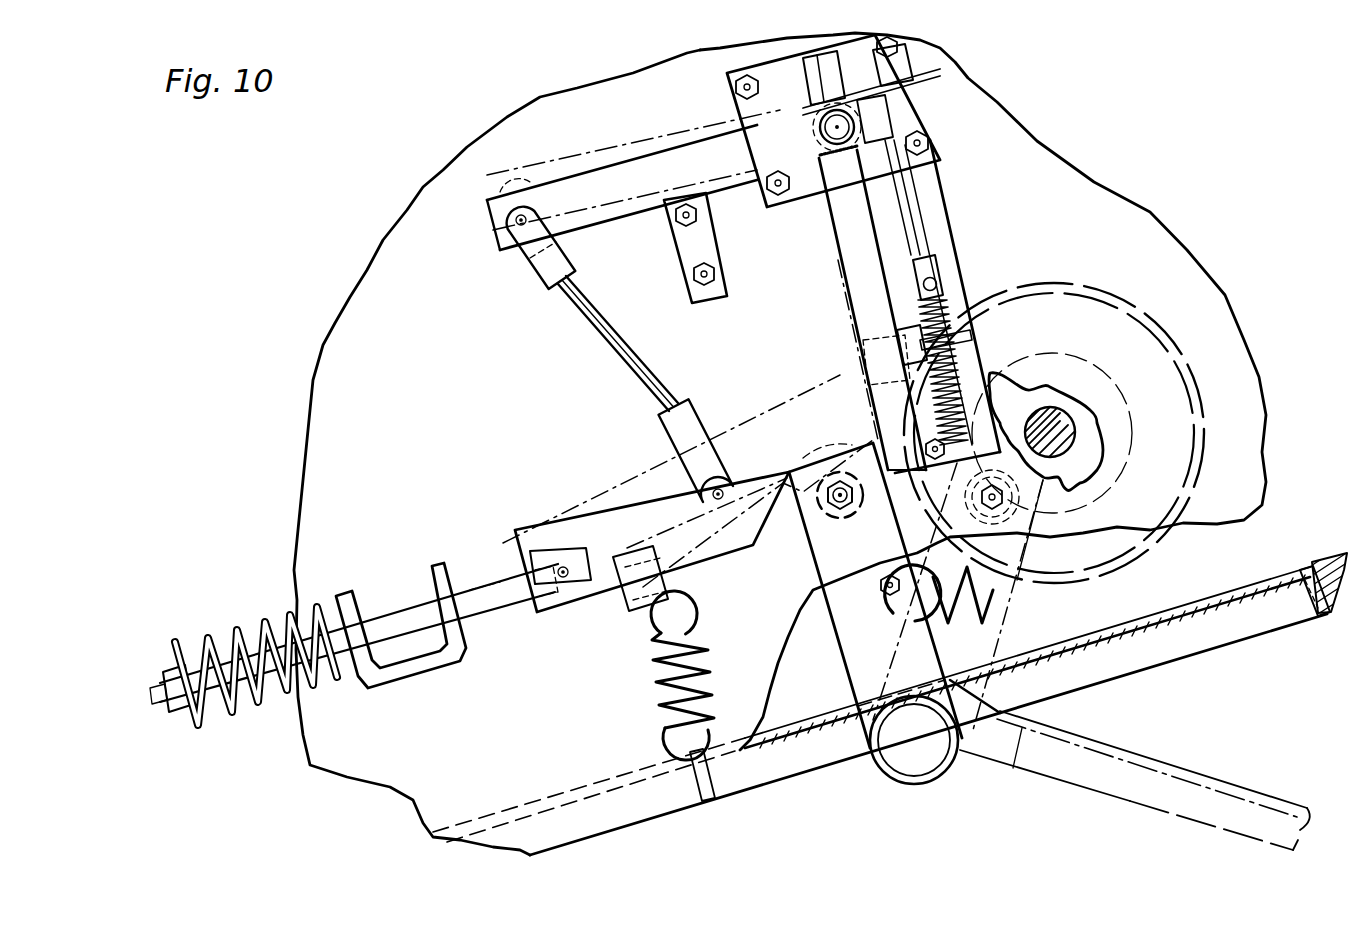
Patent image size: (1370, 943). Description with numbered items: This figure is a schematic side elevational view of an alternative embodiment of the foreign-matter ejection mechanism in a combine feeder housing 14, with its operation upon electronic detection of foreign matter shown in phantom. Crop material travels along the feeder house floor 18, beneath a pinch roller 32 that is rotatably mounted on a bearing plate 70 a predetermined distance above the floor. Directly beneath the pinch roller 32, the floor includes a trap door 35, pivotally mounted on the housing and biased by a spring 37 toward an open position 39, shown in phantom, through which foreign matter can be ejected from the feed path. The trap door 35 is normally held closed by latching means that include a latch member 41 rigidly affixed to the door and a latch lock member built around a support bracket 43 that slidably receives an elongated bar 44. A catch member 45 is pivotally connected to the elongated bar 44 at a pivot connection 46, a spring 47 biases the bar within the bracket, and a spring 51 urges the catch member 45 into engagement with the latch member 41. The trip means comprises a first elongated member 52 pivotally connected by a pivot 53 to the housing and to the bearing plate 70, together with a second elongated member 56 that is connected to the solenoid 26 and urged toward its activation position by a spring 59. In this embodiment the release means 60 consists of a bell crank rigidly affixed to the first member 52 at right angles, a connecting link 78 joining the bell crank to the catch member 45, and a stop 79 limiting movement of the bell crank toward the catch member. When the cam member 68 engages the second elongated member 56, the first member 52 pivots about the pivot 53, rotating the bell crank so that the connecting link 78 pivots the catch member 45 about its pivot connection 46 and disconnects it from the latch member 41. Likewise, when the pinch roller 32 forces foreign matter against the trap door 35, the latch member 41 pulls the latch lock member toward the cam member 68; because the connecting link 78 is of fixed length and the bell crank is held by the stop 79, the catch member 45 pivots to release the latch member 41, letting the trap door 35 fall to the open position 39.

The feeder housing 14 is at (405, 210).
The feeder house floor 18 is at (600, 776).
The solenoid 26 is at (835, 96).
The pinch roller 32 is at (1130, 297).
The trap door 35 is at (1195, 664).
The spring 37 is at (1158, 572).
The open position 39 is at (1062, 788).
The latch member 41 is at (812, 563).
The support bracket 43 is at (413, 685).
The elongated bar 44 is at (415, 606).
The catch member 45 is at (792, 399).
The pivot connection 46 is at (565, 578).
The spring 47 is at (258, 615).
The spring 51 is at (655, 680).
The first elongated member 52 is at (843, 253).
The pivot 53 is at (820, 130).
The second elongated member 56 is at (945, 276).
The spring 59 is at (962, 300).
The release means 60 is at (512, 288).
The cam member 68 is at (1095, 470).
The bearing plate 70 is at (648, 138).
The connecting link 78 is at (605, 340).
The stop 79 is at (709, 298).